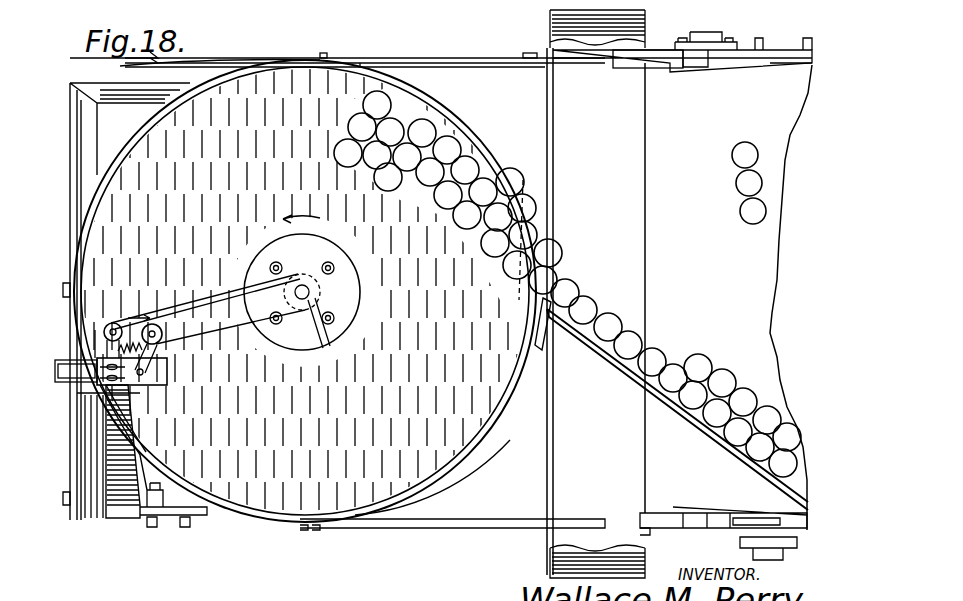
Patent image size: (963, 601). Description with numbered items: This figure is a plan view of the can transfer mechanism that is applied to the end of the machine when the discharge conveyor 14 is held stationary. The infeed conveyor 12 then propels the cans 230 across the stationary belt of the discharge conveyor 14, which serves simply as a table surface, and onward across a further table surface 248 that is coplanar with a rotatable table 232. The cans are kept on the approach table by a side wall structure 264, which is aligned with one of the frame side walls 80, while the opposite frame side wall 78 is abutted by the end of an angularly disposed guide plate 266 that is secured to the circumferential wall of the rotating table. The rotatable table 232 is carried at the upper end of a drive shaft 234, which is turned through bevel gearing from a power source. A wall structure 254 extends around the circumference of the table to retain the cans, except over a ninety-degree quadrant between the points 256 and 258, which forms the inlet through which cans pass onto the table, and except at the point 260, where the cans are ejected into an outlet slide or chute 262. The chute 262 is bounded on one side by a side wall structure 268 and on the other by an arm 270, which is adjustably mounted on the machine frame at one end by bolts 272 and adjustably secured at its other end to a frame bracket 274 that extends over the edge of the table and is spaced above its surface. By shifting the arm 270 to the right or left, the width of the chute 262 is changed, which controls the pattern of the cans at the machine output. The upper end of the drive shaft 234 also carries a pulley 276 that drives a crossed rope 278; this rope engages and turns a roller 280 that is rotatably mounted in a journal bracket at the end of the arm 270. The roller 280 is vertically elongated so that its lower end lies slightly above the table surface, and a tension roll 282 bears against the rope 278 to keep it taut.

The infeed conveyor 12 is at (743, 358).
The discharge conveyor 14 is at (650, 72).
The frame side wall 78 is at (660, 533).
The frame side wall 80 is at (793, 55).
The cans 230 is at (607, 300).
The rotatable table 232 is at (276, 76).
The drive shaft 234 is at (245, 297).
The table surface 248 is at (478, 82).
The wall structure 254 is at (117, 147).
The inlet point 256 is at (522, 292).
The inlet point 258 is at (320, 76).
The ejection point 260 is at (92, 335).
The outlet chute 262 is at (87, 477).
The side wall structure 264 is at (432, 62).
The guide plate 266 is at (730, 450).
The side wall structure 268 is at (72, 410).
The arm 270 is at (130, 444).
The bolts 272 is at (186, 528).
The frame bracket 274 is at (157, 374).
The pulley 276 is at (322, 348).
The crossed rope 278 is at (230, 300).
The roller 280 is at (110, 327).
The tension roll 282 is at (163, 337).